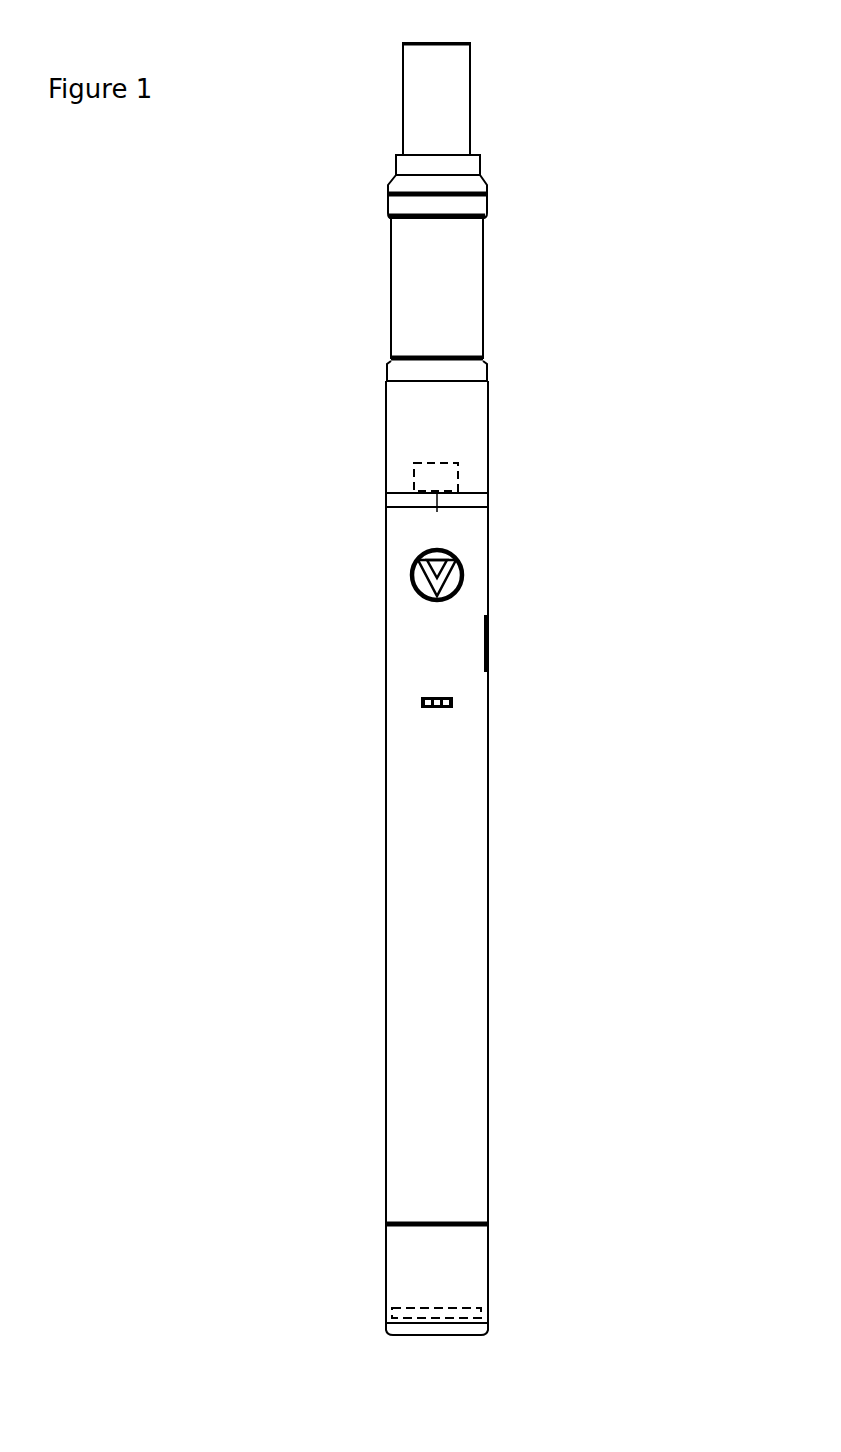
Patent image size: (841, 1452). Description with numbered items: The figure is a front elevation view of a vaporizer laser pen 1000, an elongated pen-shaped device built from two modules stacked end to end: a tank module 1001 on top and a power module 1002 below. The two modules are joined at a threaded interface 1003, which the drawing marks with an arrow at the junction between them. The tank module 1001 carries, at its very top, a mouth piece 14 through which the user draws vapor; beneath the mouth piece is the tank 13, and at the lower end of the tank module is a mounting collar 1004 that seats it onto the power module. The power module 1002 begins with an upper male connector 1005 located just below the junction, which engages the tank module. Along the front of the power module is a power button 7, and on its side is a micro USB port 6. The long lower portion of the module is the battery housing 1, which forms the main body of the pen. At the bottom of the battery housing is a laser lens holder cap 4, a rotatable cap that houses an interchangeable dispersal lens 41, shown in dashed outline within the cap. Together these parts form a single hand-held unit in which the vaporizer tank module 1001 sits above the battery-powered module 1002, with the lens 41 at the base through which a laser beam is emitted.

The battery housing 1 is at (388, 780).
The laser lens holder cap 4 is at (386, 1260).
The micro USB port 6 is at (488, 637).
The power button 7 is at (414, 565).
The tank 13 is at (388, 211).
The mouth piece 14 is at (405, 43).
The interchangeable dispersal lens 41 is at (458, 1308).
The vaporizer laser pen 1000 is at (600, 479).
The tank module 1001 is at (551, 304).
The power module 1002 is at (528, 510).
The threaded interface 1003 is at (376, 486).
The mounting collar 1004 is at (469, 453).
The upper male connector 1005 is at (437, 512).